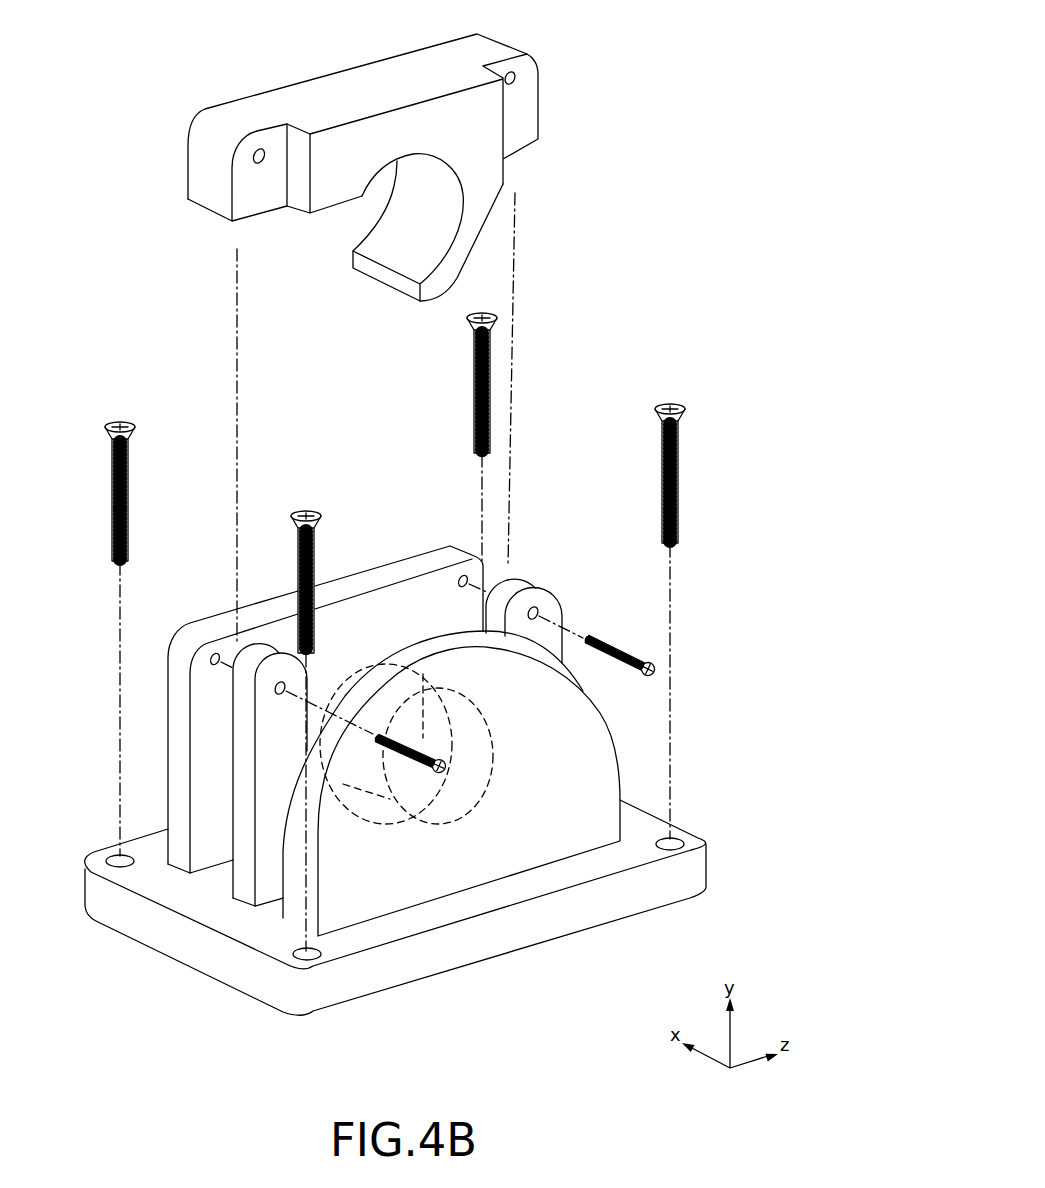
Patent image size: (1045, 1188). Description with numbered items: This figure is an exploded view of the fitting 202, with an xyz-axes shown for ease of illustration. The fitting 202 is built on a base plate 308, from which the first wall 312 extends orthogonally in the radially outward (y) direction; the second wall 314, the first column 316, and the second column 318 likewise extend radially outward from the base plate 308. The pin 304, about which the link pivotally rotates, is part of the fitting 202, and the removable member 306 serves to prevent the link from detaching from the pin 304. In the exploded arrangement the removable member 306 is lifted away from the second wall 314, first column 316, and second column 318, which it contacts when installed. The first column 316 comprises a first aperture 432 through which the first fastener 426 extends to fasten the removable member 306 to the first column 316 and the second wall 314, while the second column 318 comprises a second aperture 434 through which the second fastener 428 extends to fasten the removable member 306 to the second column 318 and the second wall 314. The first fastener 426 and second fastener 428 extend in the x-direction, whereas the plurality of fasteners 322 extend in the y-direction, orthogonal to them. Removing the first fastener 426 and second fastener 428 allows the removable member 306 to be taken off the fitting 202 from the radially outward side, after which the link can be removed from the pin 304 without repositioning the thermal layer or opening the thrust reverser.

The fitting 202 is at (643, 82).
The pin 304 is at (370, 667).
The removable member 306 is at (317, 120).
The base plate 308 is at (183, 940).
The first wall 312 is at (618, 745).
The second wall 314 is at (177, 767).
The first column 316 is at (190, 671).
The second column 318 is at (562, 617).
The plurality of fasteners 322 is at (120, 405).
The first fastener 426 is at (460, 785).
The second fastener 428 is at (665, 682).
The first aperture 432 is at (242, 686).
The second aperture 434 is at (535, 606).